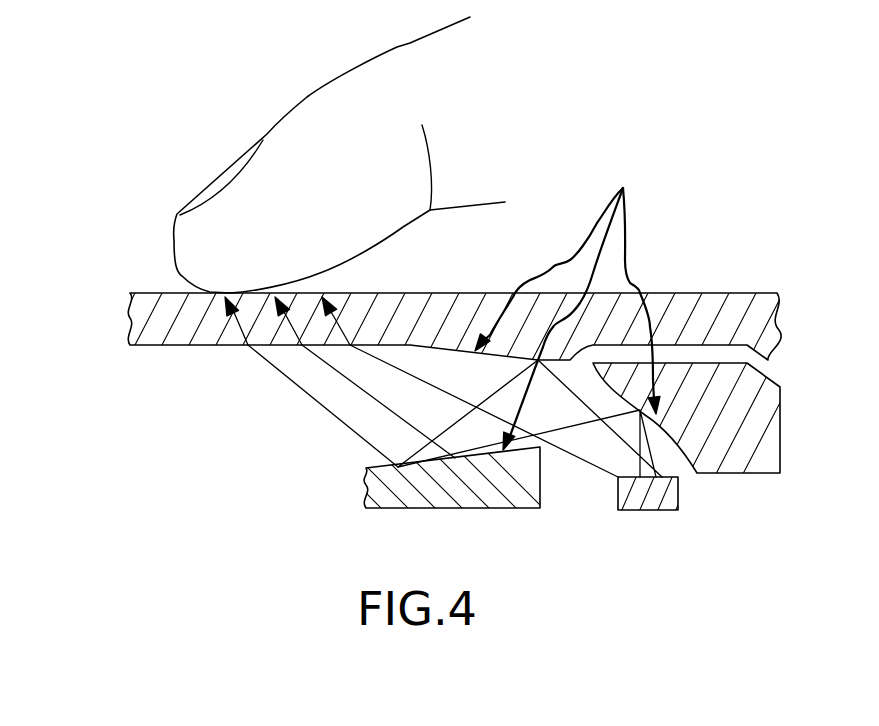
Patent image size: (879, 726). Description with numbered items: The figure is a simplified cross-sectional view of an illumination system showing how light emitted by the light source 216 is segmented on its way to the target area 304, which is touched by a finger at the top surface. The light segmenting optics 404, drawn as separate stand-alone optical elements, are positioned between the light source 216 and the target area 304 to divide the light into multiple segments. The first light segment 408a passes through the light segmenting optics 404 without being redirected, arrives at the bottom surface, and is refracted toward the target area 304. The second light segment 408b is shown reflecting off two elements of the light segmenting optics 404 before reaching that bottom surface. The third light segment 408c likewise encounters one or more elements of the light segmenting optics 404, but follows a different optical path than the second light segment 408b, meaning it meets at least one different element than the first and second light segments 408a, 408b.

The target area 304 is at (202, 288).
The light segmenting optics 404 is at (567, 305).
The first light segment 408a is at (426, 360).
The second light segment 408b is at (348, 400).
The third light segment 408c is at (278, 390).
The light source 216 is at (614, 493).